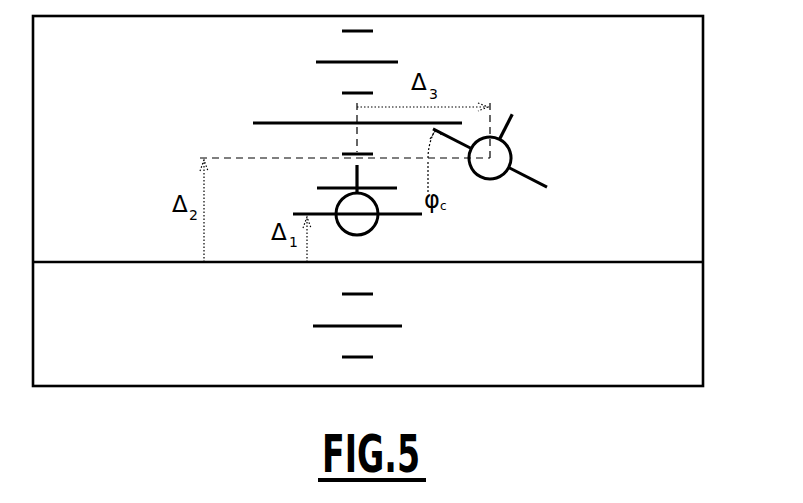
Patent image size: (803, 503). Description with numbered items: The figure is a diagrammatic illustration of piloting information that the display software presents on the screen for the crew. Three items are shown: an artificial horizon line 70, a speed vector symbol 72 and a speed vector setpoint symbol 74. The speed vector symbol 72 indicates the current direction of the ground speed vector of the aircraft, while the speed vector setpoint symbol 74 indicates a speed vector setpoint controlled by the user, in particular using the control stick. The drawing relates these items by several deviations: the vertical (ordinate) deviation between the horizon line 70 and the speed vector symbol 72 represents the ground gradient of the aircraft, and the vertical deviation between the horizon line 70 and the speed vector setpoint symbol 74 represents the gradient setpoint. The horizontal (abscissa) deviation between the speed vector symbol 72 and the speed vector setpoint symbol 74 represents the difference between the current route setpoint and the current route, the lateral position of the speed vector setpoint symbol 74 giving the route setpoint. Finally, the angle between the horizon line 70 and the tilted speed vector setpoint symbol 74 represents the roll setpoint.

The artificial horizon line 70 is at (670, 261).
The speed vector symbol 72 is at (404, 216).
The speed vector setpoint symbol 74 is at (541, 170).